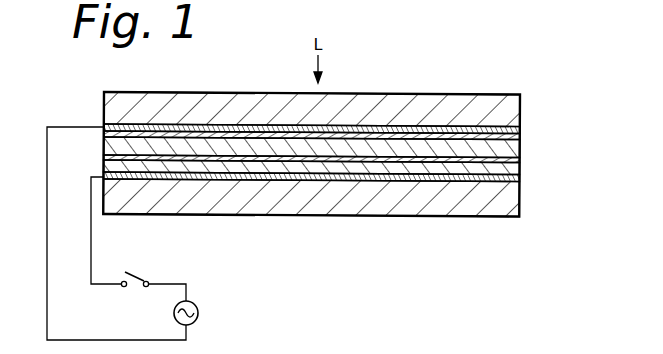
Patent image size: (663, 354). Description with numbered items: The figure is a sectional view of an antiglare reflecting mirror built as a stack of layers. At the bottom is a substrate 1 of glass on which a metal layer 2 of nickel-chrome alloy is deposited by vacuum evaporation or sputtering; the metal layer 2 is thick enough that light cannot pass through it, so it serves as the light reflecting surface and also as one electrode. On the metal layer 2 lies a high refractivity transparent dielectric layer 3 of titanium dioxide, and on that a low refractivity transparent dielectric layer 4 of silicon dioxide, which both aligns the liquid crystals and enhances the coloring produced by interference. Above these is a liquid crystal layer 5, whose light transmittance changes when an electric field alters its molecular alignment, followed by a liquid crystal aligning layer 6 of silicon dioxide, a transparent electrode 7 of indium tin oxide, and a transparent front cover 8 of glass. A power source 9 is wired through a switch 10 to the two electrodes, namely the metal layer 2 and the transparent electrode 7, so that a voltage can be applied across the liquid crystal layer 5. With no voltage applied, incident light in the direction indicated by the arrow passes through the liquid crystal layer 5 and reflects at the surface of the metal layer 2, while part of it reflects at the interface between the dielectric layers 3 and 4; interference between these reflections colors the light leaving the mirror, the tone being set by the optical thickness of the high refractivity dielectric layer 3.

The substrate 1 is at (508, 203).
The metal layer 2 is at (515, 202).
The high refractivity transparent dielectric layer 3 is at (520, 173).
The low refractivity transparent dielectric layer 4 is at (520, 165).
The liquid crystal layer 5 is at (520, 157).
The liquid crystal aligning layer 6 is at (520, 136).
The transparent electrode 7 is at (520, 130).
The transparent front cover 8 is at (511, 103).
The power source 9 is at (135, 270).
The switch 10 is at (205, 312).